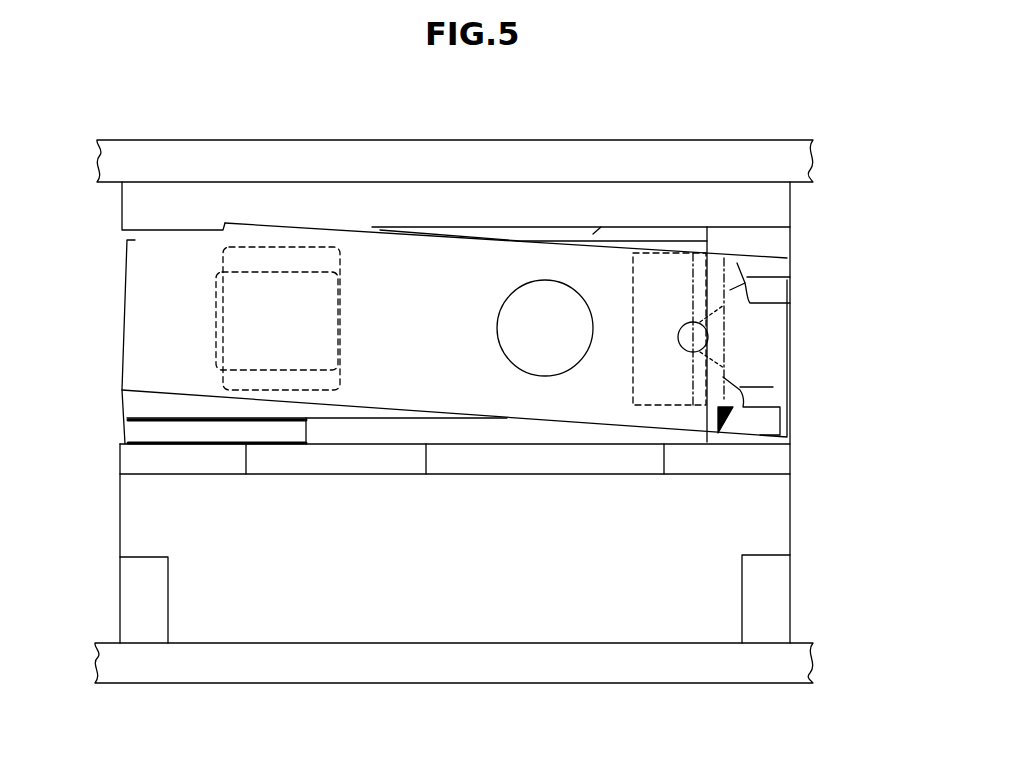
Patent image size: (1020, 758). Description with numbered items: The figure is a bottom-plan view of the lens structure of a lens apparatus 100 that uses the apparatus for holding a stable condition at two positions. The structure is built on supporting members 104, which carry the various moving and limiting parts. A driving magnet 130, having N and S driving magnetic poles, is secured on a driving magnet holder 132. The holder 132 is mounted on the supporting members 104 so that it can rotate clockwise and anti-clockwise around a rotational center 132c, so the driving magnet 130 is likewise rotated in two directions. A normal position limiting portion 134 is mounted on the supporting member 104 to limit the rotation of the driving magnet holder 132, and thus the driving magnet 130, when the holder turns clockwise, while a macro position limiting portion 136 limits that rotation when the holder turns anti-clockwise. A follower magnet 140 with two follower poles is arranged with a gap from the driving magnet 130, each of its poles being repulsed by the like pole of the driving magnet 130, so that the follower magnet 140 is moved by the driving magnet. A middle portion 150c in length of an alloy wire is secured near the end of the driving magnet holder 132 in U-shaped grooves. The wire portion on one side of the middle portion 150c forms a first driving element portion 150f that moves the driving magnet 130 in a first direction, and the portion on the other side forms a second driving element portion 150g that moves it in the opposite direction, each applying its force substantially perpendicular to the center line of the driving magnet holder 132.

The lens apparatus 100 is at (765, 138).
The supporting members 104 is at (692, 162).
The driving magnet 130 is at (213, 372).
The driving magnet holder 132 is at (370, 325).
The rotational center 132c is at (542, 327).
The normal position limiting portion 134 is at (175, 223).
The macro position limiting portion 136 is at (168, 432).
The follower magnet 140 is at (223, 257).
The middle portion of the alloy wire 150c is at (697, 336).
The first driving element portion 150f is at (745, 283).
The second driving element portion 150g is at (732, 410).